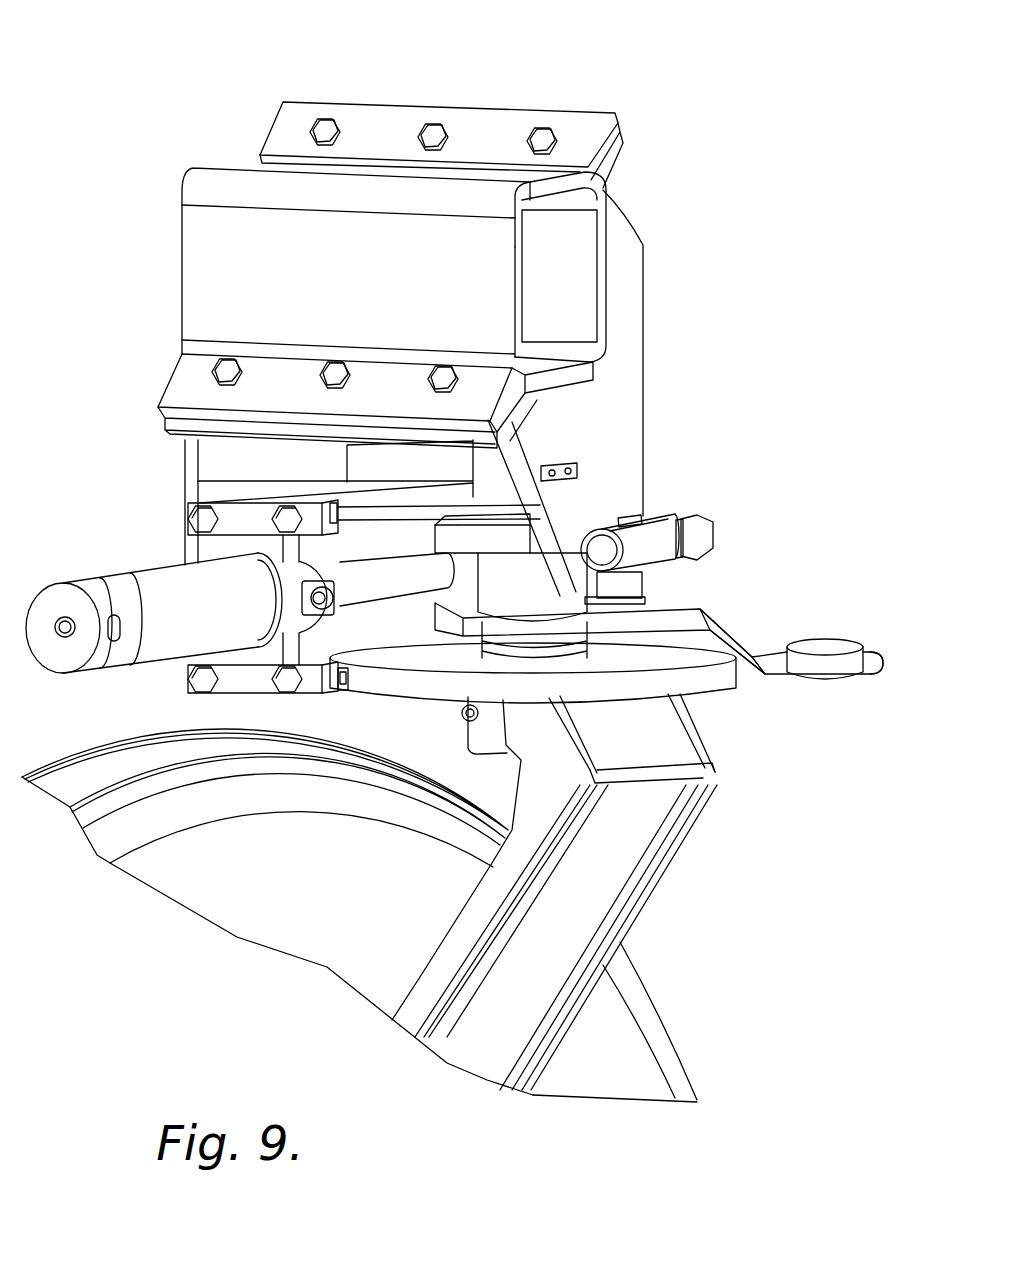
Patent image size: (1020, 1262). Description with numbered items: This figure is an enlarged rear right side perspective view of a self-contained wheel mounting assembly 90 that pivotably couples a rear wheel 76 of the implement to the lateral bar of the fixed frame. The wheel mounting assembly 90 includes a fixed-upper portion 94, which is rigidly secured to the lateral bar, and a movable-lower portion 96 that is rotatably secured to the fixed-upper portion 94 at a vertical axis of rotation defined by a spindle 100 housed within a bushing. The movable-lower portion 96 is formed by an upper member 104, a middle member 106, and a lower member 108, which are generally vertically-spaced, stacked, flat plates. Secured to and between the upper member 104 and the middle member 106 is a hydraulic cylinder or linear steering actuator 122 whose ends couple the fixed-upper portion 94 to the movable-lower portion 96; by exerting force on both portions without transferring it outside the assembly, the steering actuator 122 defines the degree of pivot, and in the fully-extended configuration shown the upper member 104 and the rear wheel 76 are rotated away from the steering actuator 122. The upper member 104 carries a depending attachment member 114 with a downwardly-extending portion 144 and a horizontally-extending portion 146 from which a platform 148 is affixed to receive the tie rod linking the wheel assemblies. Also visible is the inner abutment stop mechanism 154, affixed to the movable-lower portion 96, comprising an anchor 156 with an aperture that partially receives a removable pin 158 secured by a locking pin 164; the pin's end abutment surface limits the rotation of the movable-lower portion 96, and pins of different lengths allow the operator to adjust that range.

The wheel mounting assembly 90 is at (283, 68).
The fixed-upper portion 94 is at (657, 322).
The movable-lower portion 96 is at (737, 700).
The rear wheel 76 is at (118, 740).
The spindle 100 is at (525, 590).
The upper member 104 is at (477, 545).
The middle member 106 is at (485, 632).
The lower member 108 is at (390, 677).
The depending attachment member 114 is at (742, 615).
The steering actuator 122 is at (163, 588).
The downwardly-extending portion 144 is at (752, 650).
The horizontally-extending portion 146 is at (885, 662).
The platform 148 is at (848, 645).
The inner abutment stop mechanism 154 is at (658, 522).
The anchor 156 is at (650, 560).
The removable pin 158 is at (713, 540).
The locking pin 164 is at (630, 516).